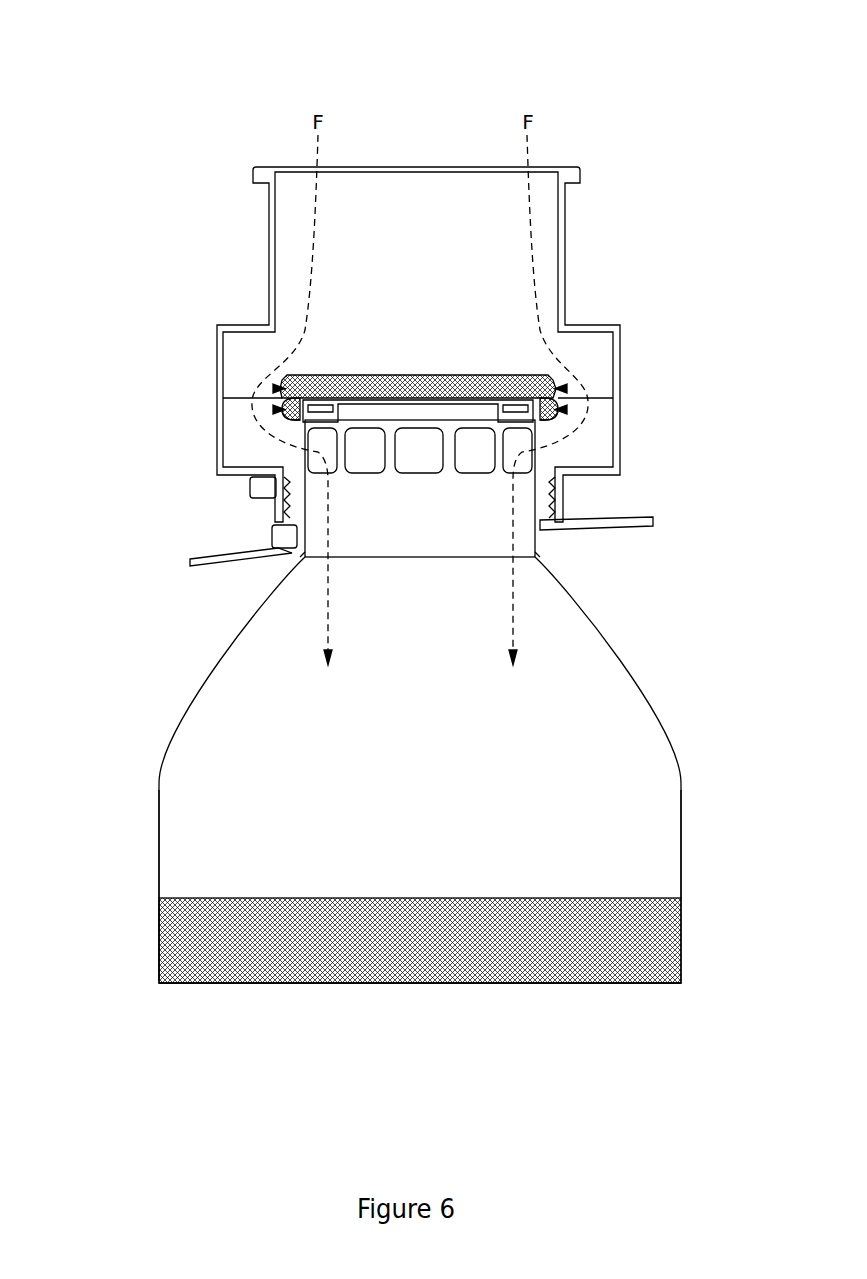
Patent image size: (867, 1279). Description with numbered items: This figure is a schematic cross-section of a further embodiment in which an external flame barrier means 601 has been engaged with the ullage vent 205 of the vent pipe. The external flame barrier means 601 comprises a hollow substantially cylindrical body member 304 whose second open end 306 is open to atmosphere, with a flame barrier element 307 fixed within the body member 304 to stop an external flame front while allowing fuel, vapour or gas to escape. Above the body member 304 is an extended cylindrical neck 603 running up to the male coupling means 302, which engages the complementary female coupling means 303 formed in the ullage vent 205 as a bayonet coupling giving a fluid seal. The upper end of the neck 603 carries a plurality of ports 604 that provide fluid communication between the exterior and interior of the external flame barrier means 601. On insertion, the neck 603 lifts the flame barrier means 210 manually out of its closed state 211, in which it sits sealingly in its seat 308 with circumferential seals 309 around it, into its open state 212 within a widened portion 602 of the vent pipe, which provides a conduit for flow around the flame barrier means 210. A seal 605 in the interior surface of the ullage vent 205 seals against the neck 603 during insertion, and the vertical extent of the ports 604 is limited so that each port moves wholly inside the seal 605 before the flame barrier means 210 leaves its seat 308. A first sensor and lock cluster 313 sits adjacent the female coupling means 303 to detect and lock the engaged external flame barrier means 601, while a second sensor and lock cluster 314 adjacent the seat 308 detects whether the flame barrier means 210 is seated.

The flame barrier means 210 is at (420, 378).
The ullage vent 205 is at (565, 207).
The widened portion 602 is at (222, 355).
The circumferential seals 309 is at (273, 388).
The female coupling means 303 is at (280, 398).
The male coupling means 302 is at (285, 422).
The ports 604 is at (307, 447).
The second sensor and lock cluster 314 is at (250, 487).
The seat 308 is at (272, 523).
The first sensor and lock cluster 313 is at (283, 540).
The seal 605 is at (290, 560).
The external flame barrier means 601 is at (130, 837).
The second open end 306 is at (212, 983).
The open state 212 is at (540, 378).
The extended cylindrical neck 603 is at (563, 487).
The closed state 211 is at (440, 505).
The body member 304 is at (679, 764).
The flame barrier element 307 is at (680, 945).